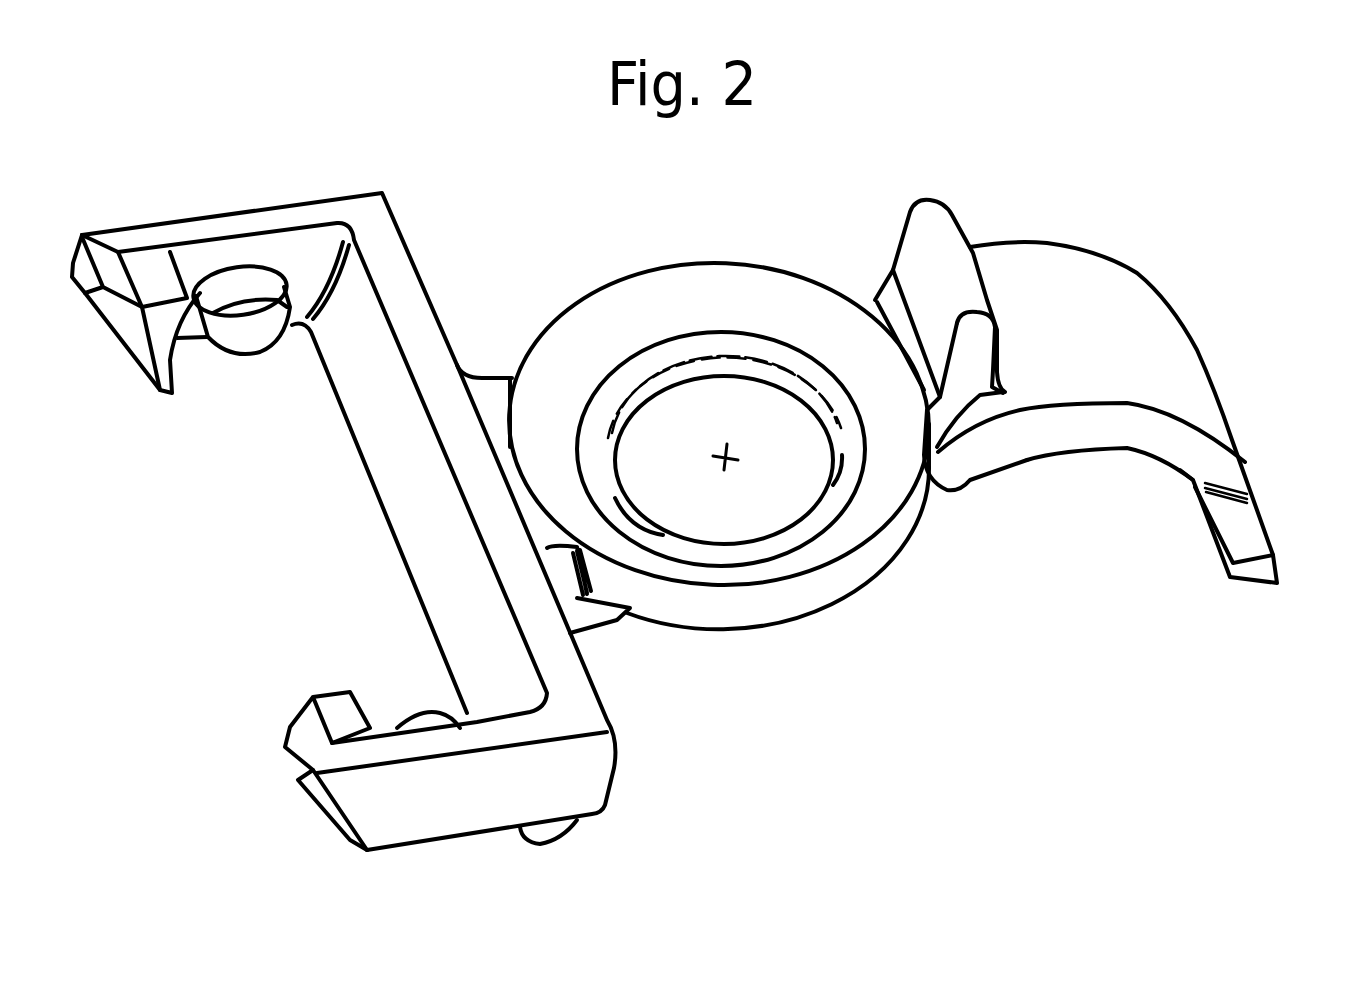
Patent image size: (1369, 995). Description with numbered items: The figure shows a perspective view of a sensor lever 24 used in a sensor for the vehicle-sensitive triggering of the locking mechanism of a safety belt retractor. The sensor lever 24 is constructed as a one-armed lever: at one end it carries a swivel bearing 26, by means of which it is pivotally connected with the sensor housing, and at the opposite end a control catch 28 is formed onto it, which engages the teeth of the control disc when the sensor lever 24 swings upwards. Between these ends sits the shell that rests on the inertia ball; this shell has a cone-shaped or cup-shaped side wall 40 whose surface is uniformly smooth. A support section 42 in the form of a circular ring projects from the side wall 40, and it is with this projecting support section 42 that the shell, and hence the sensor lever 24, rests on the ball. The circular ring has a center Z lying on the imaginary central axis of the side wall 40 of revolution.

The sensor lever 24 is at (733, 650).
The swivel bearing 26 is at (250, 340).
The control catch 28 is at (1250, 543).
The cone-shaped side wall 40 is at (760, 288).
The support section 42 is at (670, 358).
The center Z is at (728, 456).